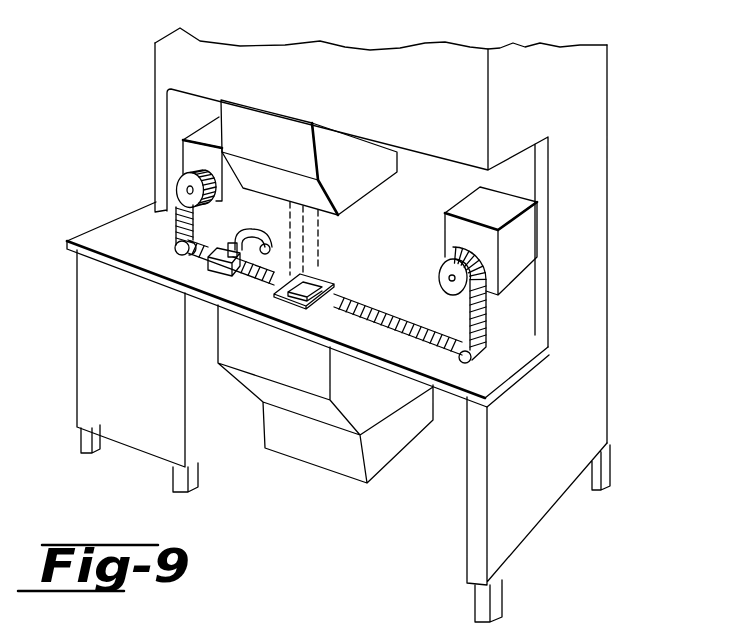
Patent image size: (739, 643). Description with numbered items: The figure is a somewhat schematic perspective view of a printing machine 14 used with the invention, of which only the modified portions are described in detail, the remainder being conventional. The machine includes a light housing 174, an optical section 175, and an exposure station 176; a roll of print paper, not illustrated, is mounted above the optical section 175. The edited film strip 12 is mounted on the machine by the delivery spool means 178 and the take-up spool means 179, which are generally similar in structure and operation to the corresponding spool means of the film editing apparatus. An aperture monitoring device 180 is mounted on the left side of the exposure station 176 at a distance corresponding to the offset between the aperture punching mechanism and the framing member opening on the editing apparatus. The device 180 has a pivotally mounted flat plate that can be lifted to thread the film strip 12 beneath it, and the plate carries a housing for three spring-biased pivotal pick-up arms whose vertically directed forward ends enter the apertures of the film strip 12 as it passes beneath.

The printing machine 14 is at (612, 273).
The edited film strip 12 is at (418, 325).
The light housing 174 is at (333, 448).
The optical section 175 is at (357, 157).
The exposure station 176 is at (331, 272).
The delivery spool means 178 is at (452, 263).
The take-up spool means 179 is at (182, 182).
The aperture monitoring device 180 is at (203, 273).